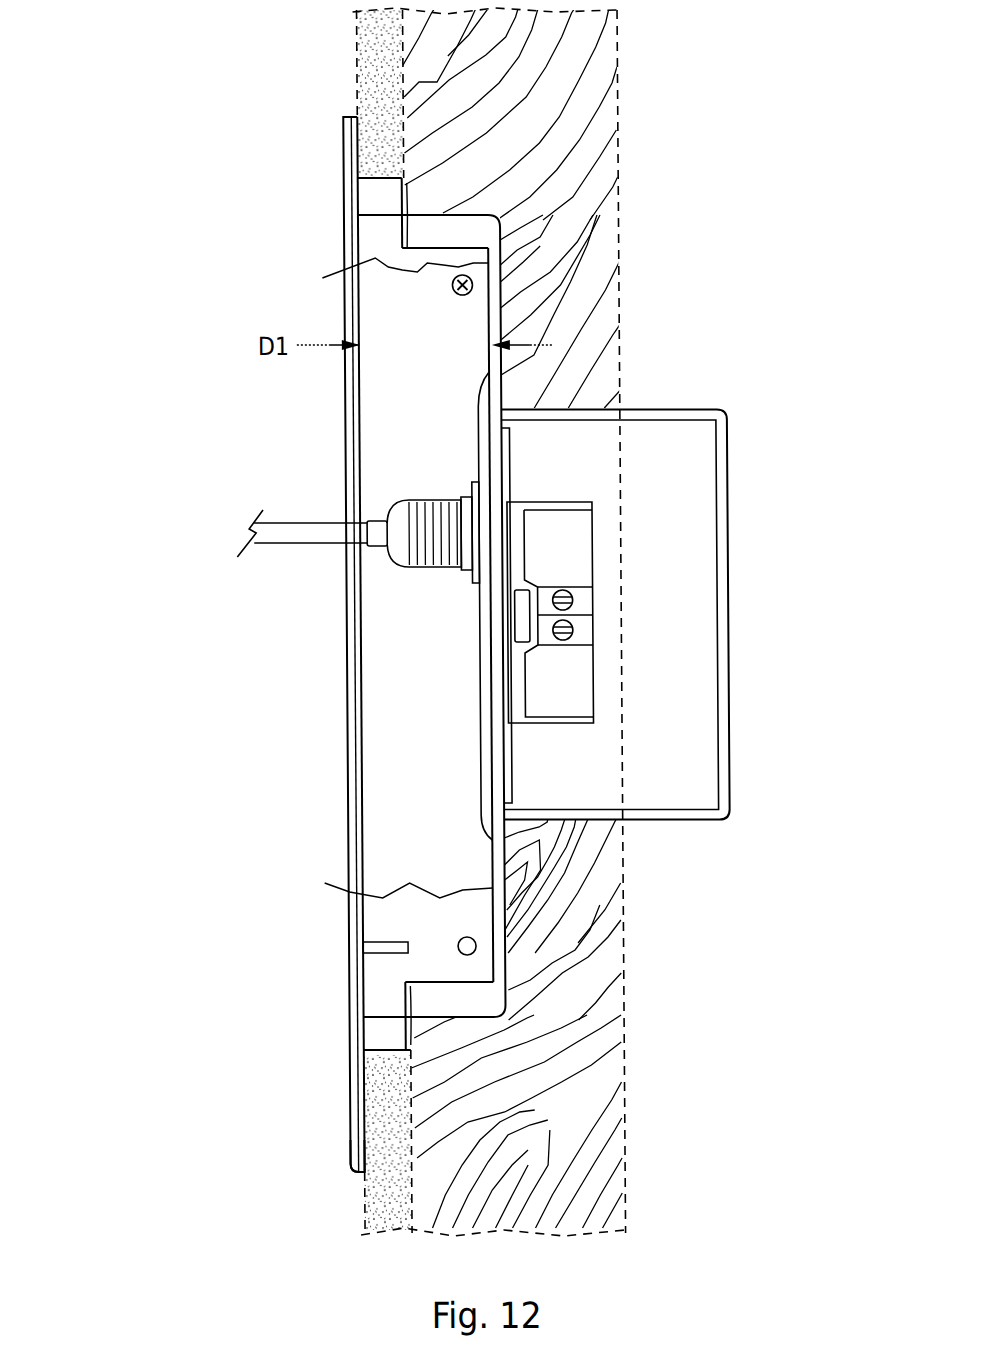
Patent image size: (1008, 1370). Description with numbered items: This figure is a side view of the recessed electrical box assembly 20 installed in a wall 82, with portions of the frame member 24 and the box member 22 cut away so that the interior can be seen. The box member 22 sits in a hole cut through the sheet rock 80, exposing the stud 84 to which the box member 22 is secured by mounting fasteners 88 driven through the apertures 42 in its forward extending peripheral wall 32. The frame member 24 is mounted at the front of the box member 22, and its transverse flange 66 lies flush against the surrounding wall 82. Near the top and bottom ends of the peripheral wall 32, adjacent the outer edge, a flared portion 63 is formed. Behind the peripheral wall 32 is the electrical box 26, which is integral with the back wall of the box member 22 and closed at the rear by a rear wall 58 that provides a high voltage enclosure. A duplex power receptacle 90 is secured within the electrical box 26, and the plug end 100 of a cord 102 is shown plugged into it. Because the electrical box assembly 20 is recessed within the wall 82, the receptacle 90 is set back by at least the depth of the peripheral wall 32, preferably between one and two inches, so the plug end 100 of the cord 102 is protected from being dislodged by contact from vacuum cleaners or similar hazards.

The electrical box assembly 20 is at (154, 293).
The box member 22 is at (449, 213).
The frame member 24 is at (347, 163).
The electrical box 26 is at (667, 585).
The peripheral wall 32 is at (434, 645).
The apertures 42 is at (475, 947).
The rear wall 58 is at (718, 606).
The flared portion 63 is at (382, 1038).
The transverse flange 66 is at (354, 1100).
The sheet rock 80 is at (386, 38).
The wall 82 is at (361, 98).
The stud 84 is at (602, 45).
The mounting fasteners 88 is at (480, 285).
The duplex power receptacle 90 is at (572, 562).
The plug ends 100 is at (432, 497).
The cords 102 is at (307, 540).